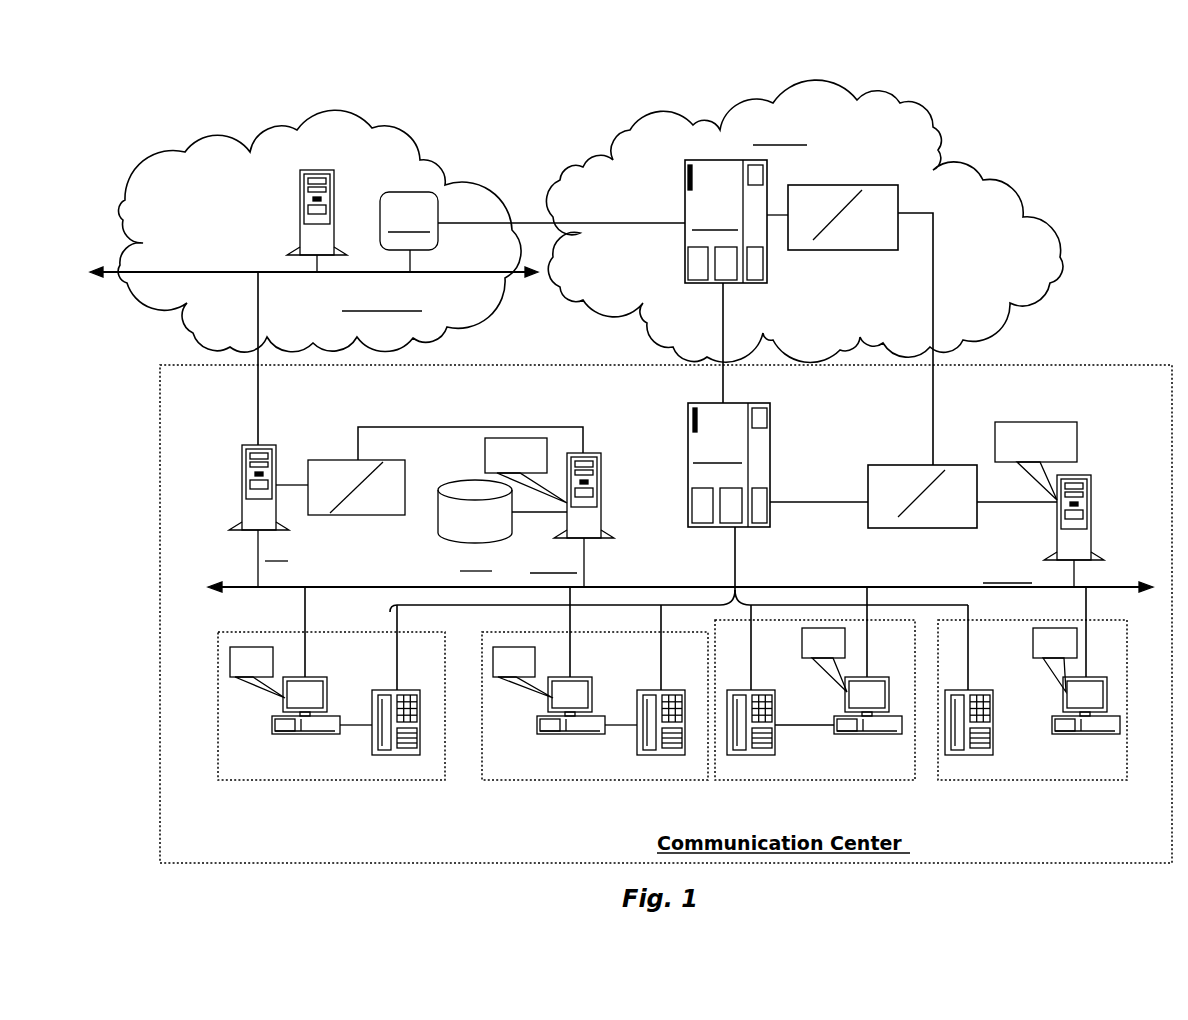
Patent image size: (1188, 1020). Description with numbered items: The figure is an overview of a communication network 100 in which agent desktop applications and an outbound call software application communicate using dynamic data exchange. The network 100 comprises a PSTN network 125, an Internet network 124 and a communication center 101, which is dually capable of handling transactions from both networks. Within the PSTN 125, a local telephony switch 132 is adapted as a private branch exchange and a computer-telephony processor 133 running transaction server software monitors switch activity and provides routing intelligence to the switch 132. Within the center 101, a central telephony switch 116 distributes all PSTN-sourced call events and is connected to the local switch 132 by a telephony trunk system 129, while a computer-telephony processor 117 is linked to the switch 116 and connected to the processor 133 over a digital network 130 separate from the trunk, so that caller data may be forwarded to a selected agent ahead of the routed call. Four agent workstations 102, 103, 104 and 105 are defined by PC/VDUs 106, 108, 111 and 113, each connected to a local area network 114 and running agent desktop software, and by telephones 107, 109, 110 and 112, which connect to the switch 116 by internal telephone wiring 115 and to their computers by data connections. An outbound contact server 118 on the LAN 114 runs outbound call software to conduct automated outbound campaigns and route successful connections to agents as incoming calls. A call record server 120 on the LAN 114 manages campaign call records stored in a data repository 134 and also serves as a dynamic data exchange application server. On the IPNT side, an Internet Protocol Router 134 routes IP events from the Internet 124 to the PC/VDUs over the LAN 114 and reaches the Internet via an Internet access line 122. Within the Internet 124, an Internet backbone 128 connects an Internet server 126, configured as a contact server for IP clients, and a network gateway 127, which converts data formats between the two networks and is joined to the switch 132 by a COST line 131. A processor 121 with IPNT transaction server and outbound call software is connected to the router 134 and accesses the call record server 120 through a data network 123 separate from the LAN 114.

The communication network 100 is at (118, 157).
The communication center 101 is at (1065, 355).
The agent workstation 102 is at (346, 792).
The agent workstation 103 is at (606, 792).
The agent workstation 104 is at (814, 795).
The agent workstation 105 is at (1043, 795).
The PC/VDU 106 is at (328, 736).
The telephone 107 is at (372, 717).
The PC/VDU 108 is at (595, 738).
The telephone 109 is at (637, 710).
The telephone 110 is at (760, 755).
The PC/VDU 111 is at (843, 705).
The telephone 112 is at (993, 717).
The PC/VDU 113 is at (1060, 738).
The local area network 114 is at (685, 583).
The internal telephone wiring 115 is at (737, 570).
The central telephony switch 116 is at (770, 483).
The CTI processor 117 is at (927, 465).
The outbound contact server 118 is at (1091, 528).
The call record server 120 is at (600, 493).
The processor 121 is at (363, 515).
The Internet access line 122 is at (258, 433).
The data network 123 is at (480, 427).
The Internet network 124 is at (273, 124).
The PSTN network 125 is at (713, 114).
The Internet server 126 is at (300, 210).
The network gateway 127 is at (380, 218).
The Internet backbone 128 is at (148, 272).
The telephony trunk system 129 is at (723, 333).
The digital network 130 is at (933, 313).
The COST line 131 is at (543, 218).
The local telephony switch 132 is at (685, 195).
The CTI processor 133 is at (888, 185).
The data repository 134 is at (242, 485).